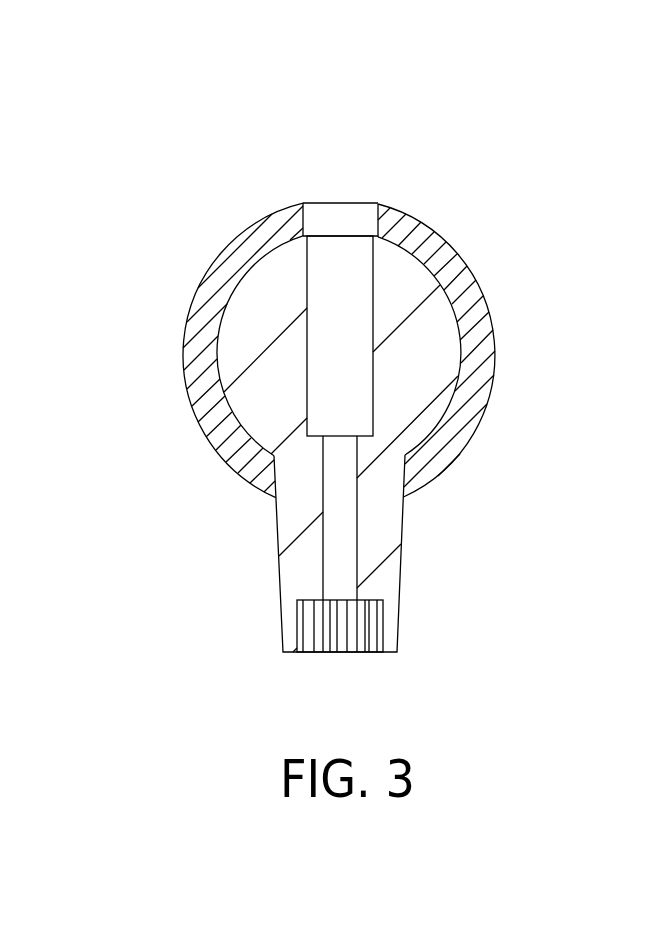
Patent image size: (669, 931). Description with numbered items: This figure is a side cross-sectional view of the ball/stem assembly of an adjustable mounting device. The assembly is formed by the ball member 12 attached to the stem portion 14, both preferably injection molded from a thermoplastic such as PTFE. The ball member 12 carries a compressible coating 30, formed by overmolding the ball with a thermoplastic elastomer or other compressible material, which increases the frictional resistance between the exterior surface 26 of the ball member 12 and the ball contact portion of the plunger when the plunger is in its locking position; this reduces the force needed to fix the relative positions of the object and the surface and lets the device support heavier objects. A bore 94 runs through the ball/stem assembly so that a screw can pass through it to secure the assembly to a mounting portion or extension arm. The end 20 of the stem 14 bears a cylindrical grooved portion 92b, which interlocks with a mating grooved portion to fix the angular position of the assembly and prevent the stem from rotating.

The end 20 is at (188, 158).
The ball member 12 is at (438, 315).
The stem portion 14 is at (380, 550).
The exterior surface 26 is at (482, 422).
The compressible coating 30 is at (485, 357).
The bore 94 is at (350, 303).
The cylindrical grooved portion 92b is at (328, 648).